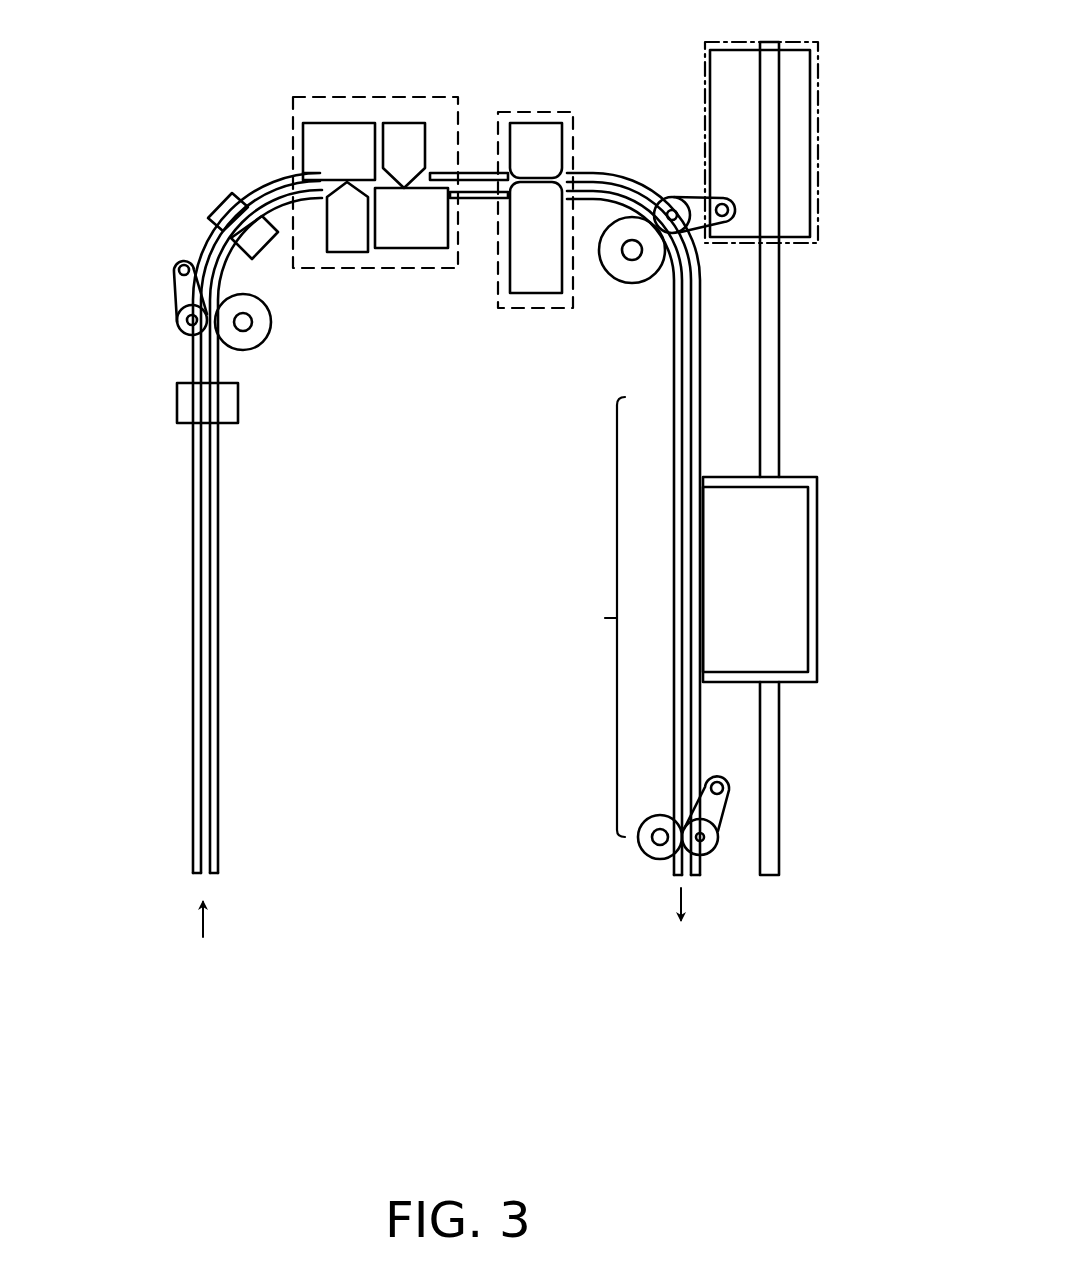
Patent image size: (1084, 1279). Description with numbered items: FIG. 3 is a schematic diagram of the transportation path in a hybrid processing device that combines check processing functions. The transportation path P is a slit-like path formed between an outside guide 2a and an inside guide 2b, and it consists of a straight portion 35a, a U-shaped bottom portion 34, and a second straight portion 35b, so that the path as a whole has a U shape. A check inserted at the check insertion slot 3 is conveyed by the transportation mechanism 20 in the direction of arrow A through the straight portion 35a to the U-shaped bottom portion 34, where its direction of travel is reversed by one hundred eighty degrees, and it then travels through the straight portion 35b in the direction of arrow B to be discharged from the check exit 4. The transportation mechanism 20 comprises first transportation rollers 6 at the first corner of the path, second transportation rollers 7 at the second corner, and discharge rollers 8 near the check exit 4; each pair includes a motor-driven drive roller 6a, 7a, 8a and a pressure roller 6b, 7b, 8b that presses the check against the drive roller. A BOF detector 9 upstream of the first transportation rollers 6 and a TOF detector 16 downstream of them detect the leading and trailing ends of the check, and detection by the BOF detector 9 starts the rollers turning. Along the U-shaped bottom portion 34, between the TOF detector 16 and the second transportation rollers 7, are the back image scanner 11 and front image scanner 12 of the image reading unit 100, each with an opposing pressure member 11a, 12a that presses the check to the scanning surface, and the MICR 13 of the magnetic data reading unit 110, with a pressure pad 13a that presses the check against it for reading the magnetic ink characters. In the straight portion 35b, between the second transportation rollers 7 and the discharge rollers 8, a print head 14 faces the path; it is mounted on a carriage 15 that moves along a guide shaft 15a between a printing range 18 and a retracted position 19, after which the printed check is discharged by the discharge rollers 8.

The outside guide 2a is at (701, 335).
The inside guide 2b is at (676, 288).
The check insertion slot 3 is at (200, 557).
The check exit 4 is at (724, 566).
The first transportation rollers 6 is at (184, 256).
The drive roller 6a is at (250, 298).
The pressure roller 6b is at (200, 208).
The second transportation rollers 7 is at (667, 188).
The drive roller 7a is at (613, 223).
The pressure roller 7b is at (694, 186).
The discharge rollers 8 is at (788, 813).
The drive roller 8a is at (663, 815).
The pressure roller 8b is at (706, 820).
The BOF detector 9 is at (185, 403).
The back image scanner 11 is at (345, 130).
The pressure member 11a is at (345, 240).
The front image scanner 12 is at (410, 250).
The pressure member 12a is at (406, 133).
The MICR 13 is at (540, 228).
The pressure member 13a is at (537, 133).
The print head 14 is at (795, 503).
The carriage 15 is at (806, 559).
The guide shaft 15a is at (782, 375).
The TOF detector 16 is at (230, 193).
The printing range 18 is at (604, 620).
The retracted position 19 is at (833, 53).
The transportation mechanism 20 is at (517, 476).
The U-shaped bottom portion 34 is at (473, 148).
The straight portion 35a is at (186, 505).
The straight portion 35b is at (724, 524).
The image reading unit 100 is at (389, 167).
The magnetic data reading unit 110 is at (563, 212).
The transportation path P is at (277, 190).
The arrow A is at (202, 936).
The arrow B is at (680, 924).